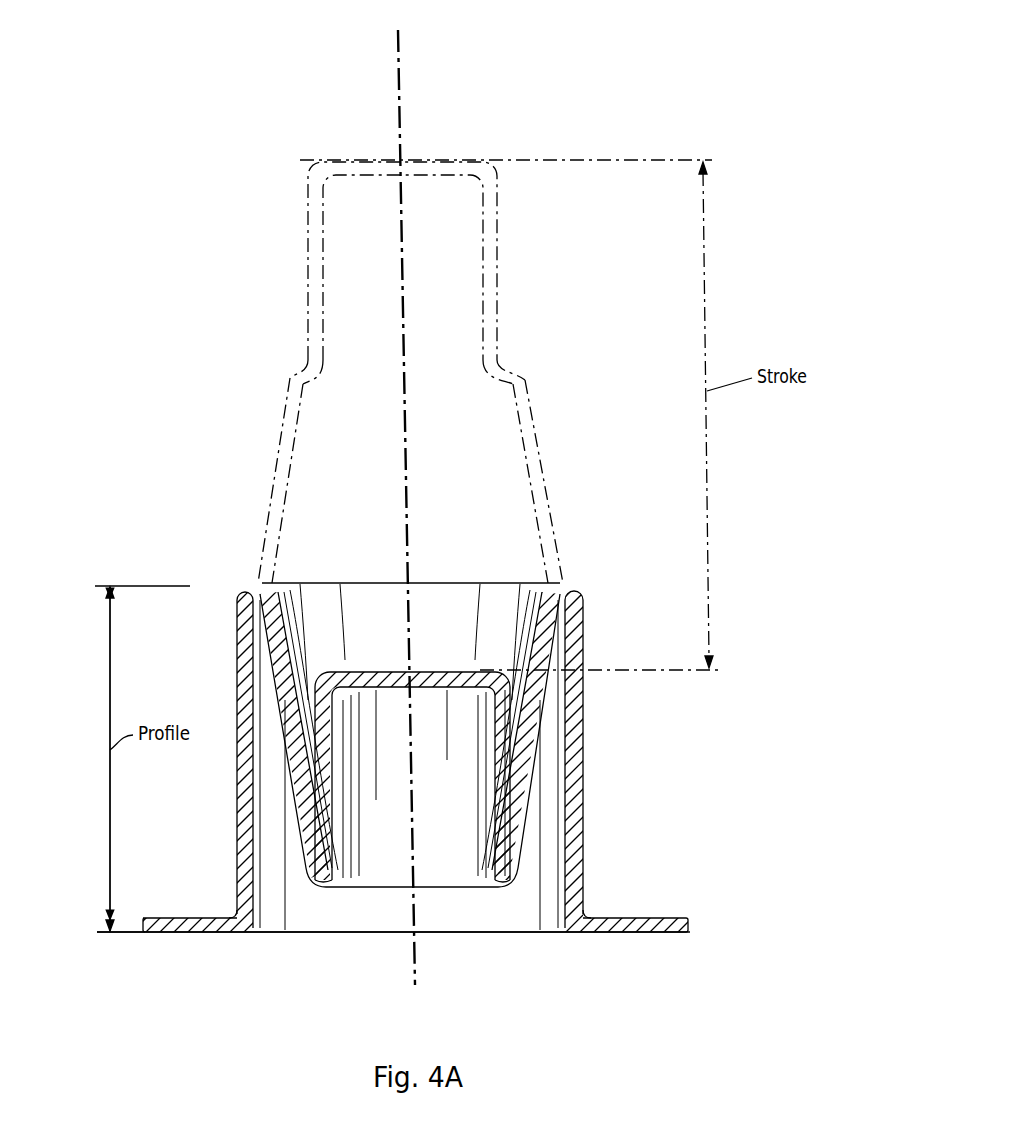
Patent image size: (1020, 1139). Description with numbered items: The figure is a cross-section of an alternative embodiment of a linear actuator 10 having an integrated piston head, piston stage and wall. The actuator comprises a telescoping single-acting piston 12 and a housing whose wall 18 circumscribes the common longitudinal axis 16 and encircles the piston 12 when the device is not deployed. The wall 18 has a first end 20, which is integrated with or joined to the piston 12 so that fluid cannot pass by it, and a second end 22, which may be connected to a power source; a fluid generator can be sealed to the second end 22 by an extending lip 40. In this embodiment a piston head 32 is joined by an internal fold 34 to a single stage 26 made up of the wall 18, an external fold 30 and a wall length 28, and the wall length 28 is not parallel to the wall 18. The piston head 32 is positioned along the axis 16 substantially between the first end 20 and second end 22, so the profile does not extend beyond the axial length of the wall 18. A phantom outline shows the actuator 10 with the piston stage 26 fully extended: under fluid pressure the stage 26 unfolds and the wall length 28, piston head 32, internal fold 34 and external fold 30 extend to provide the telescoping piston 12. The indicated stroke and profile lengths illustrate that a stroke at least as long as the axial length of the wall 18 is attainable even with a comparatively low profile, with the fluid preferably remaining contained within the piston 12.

The linear actuator 10 is at (240, 128).
The piston 12 is at (317, 150).
The longitudinal axis 16 is at (401, 57).
The wall 18 is at (579, 775).
The first end 20 is at (598, 596).
The second end 22 is at (604, 902).
The piston stage 26 is at (268, 356).
The wall length 28 is at (565, 718).
The external fold 30 is at (559, 580).
The piston head 32 is at (435, 688).
The internal fold 34 is at (513, 888).
The extending lip 40 is at (633, 933).